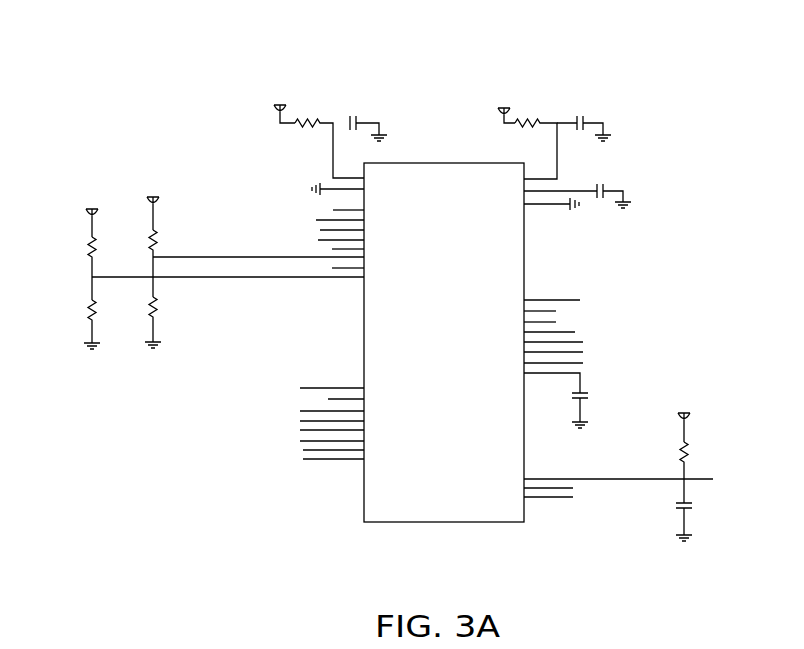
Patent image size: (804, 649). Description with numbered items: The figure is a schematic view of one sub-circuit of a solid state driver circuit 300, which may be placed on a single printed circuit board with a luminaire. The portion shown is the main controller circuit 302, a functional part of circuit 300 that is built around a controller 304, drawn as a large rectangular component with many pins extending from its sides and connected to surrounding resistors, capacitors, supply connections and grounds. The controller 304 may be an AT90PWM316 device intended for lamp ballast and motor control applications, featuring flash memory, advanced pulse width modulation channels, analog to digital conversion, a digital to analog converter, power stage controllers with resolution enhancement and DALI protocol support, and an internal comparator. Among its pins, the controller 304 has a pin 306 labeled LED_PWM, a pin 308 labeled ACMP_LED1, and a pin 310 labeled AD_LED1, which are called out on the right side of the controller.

The solid state driver circuit 300 is at (187, 29).
The main controller circuit 302 is at (128, 137).
The controller 304 is at (323, 497).
The LED_PWM pin 306 is at (580, 300).
The ACMP_LED1 pin 308 is at (583, 352).
The AD_LED1 pin 310 is at (583, 363).